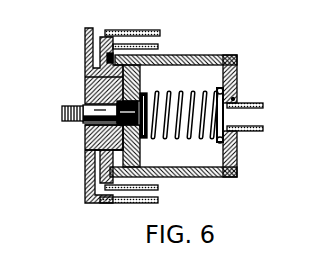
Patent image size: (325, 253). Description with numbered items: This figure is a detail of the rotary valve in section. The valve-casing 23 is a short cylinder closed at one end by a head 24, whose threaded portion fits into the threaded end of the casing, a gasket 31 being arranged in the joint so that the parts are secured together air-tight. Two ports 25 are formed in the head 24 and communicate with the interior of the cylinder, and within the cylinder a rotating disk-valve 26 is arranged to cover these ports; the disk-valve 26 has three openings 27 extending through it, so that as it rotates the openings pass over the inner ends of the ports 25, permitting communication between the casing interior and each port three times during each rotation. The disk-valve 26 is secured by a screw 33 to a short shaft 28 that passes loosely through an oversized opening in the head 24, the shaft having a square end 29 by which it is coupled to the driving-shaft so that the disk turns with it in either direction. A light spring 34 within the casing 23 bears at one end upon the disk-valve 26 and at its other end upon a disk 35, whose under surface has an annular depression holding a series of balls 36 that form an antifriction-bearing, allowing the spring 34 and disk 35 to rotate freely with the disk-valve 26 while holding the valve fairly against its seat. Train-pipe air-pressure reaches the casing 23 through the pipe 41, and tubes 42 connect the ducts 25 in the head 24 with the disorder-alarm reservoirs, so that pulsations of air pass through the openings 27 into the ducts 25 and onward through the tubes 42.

The valve-casing 23 is at (205, 55).
The head 24 is at (85, 80).
The ports 25 is at (100, 43).
The rotating disk-valve 26 is at (141, 150).
The openings 27 is at (141, 85).
The short shaft 28 is at (88, 108).
The square end 29 is at (63, 119).
The gasket 31 is at (110, 60).
The screw 33 is at (86, 141).
The spring 34 is at (188, 106).
The disk 35 is at (234, 98).
The balls 36 is at (224, 93).
The pipe 41 is at (252, 117).
The tubes 42 is at (160, 33).